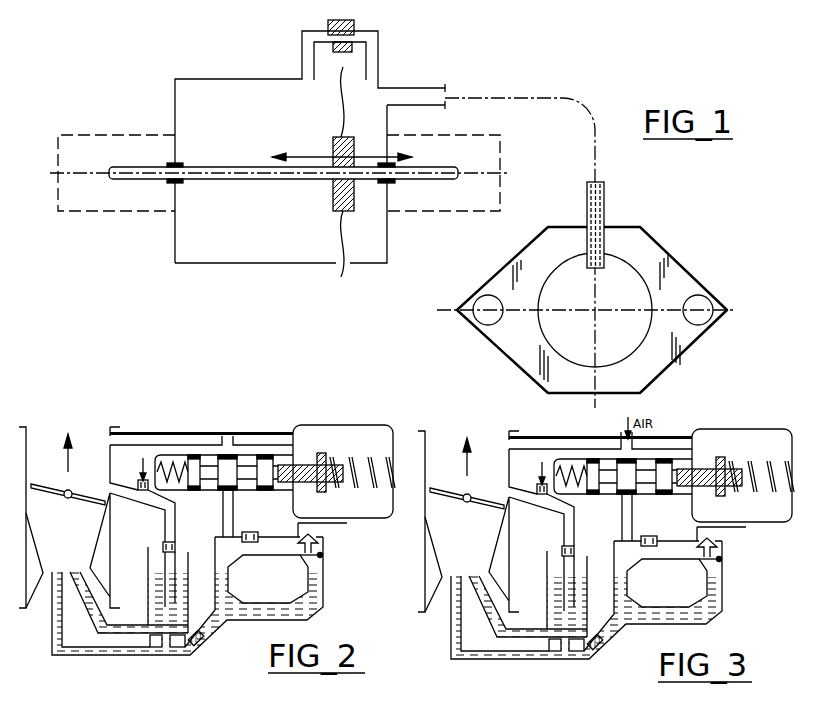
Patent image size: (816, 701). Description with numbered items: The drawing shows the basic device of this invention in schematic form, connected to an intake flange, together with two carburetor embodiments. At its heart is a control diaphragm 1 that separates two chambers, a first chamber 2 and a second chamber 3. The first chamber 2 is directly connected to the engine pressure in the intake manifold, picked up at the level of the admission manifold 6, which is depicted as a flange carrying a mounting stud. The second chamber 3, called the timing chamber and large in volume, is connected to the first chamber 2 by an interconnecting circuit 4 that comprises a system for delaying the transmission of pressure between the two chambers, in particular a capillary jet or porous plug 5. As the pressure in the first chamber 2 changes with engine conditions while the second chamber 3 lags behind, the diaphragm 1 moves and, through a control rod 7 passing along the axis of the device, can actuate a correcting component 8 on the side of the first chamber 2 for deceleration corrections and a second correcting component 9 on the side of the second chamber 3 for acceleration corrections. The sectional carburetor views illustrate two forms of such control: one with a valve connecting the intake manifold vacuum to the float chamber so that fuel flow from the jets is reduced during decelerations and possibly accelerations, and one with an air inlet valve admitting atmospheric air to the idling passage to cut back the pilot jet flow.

In FIG. 1, the control diaphragm 1 is at (343, 105).
In FIG. 2, the control diaphragm 1 is at (320, 502).
In FIG. 3, the control diaphragm 1 is at (732, 538).
In FIG. 1, the first chamber 2 is at (370, 243).
In FIG. 2, the first chamber 2 is at (308, 500).
In FIG. 3, the first chamber 2 is at (699, 501).
In FIG. 1, the second chamber 3 is at (279, 241).
In FIG. 2, the second chamber 3 is at (372, 502).
In FIG. 3, the second chamber 3 is at (749, 491).
In FIG. 1, the interconnecting circuit 4 is at (355, 26).
In FIG. 2, the interconnecting circuit 4 is at (313, 462).
In FIG. 3, the interconnecting circuit 4 is at (700, 443).
In FIG. 1, the capillary jet or porous plug 5 is at (318, 41).
In FIG. 2, the capillary jet or porous plug 5 is at (357, 482).
In FIG. 3, the capillary jet or porous plug 5 is at (761, 446).
In FIG. 1, the admission manifold 6 is at (623, 243).
In FIG. 1, the control rod 7 is at (203, 178).
In FIG. 1, the correcting component 8 is at (485, 171).
In FIG. 1, the second correcting component 9 is at (94, 171).